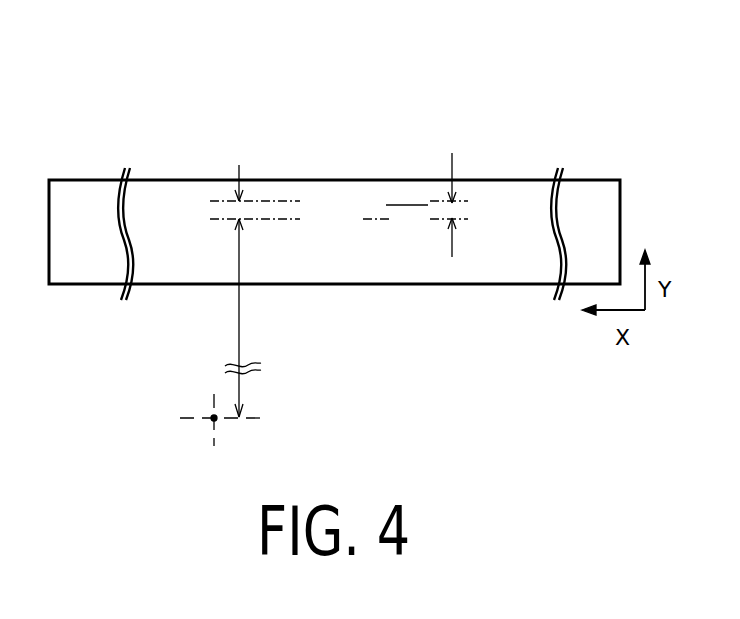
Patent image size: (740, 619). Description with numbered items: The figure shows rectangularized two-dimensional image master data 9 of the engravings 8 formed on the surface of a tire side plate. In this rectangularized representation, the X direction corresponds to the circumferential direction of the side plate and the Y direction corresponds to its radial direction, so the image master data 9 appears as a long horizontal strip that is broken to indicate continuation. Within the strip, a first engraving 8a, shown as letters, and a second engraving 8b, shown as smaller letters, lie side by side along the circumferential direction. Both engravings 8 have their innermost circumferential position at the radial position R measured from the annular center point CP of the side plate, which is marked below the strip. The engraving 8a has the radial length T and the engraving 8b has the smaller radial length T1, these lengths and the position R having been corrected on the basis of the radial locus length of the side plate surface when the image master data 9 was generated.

The engraving 8 is at (469, 97).
The engraving 8a is at (318, 190).
The engraving 8b is at (411, 203).
The image master data 9 is at (523, 167).
The radial length T is at (250, 291).
The radial length T1 is at (474, 205).
The radial position R is at (246, 361).
The annular center point CP is at (214, 418).